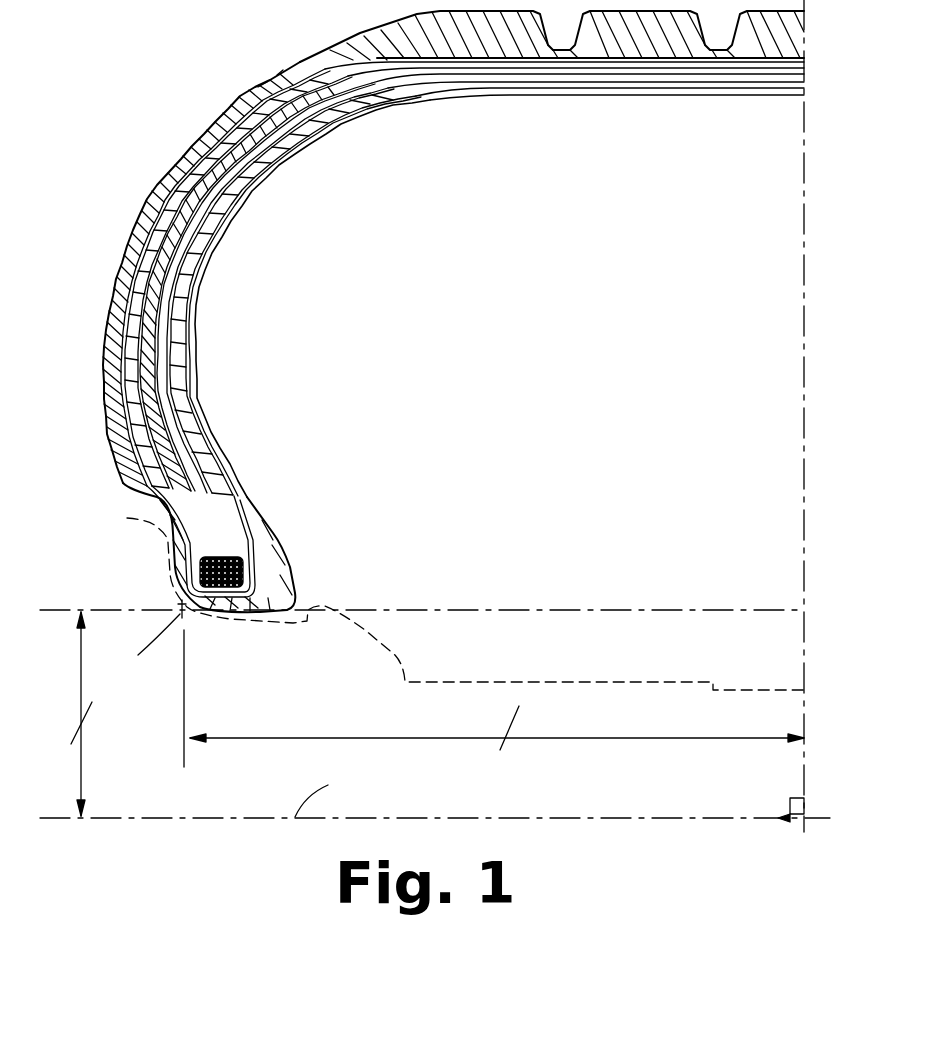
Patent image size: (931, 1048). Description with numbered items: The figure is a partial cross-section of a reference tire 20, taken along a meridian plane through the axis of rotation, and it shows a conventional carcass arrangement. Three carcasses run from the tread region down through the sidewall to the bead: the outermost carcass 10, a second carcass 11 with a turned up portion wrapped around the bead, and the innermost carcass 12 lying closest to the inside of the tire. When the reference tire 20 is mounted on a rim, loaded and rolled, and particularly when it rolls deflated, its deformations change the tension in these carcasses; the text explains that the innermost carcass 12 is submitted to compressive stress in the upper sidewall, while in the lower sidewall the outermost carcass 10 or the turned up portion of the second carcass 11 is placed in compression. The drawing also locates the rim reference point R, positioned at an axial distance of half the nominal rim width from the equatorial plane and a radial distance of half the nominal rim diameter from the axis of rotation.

The outermost carcass 10 is at (180, 165).
The second carcass 11 is at (233, 180).
The innermost carcass 12 is at (187, 237).
The reference tire 20 is at (565, 319).